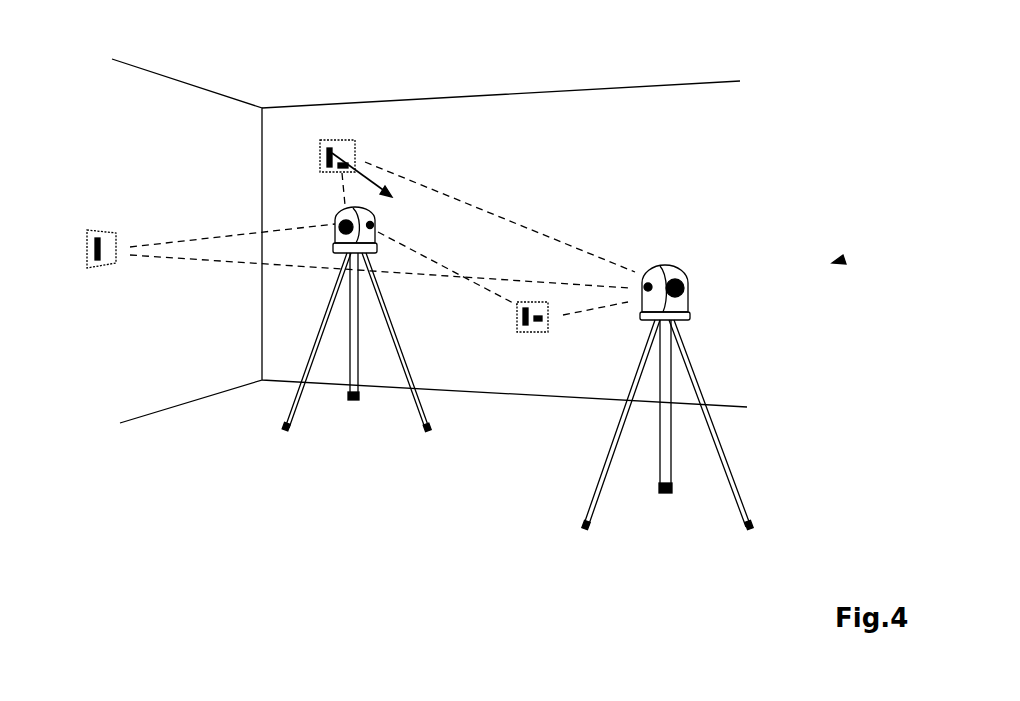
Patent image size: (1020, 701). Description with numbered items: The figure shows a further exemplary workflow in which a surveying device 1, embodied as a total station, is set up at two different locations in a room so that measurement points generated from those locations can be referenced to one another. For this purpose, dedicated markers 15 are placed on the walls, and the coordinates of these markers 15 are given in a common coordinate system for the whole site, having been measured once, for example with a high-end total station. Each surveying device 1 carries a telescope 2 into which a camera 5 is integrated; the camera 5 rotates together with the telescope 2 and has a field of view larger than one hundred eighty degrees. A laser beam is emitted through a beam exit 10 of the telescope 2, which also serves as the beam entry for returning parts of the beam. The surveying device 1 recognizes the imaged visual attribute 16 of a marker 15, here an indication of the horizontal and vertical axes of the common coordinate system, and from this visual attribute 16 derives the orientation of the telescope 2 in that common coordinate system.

The surveying device 1 is at (327, 153).
The telescope 2 is at (758, 270).
The fish-eye camera 5 is at (463, 222).
The beam exit 10 is at (433, 227).
The marker 15 is at (198, 238).
The visual attribute 16 is at (433, 165).